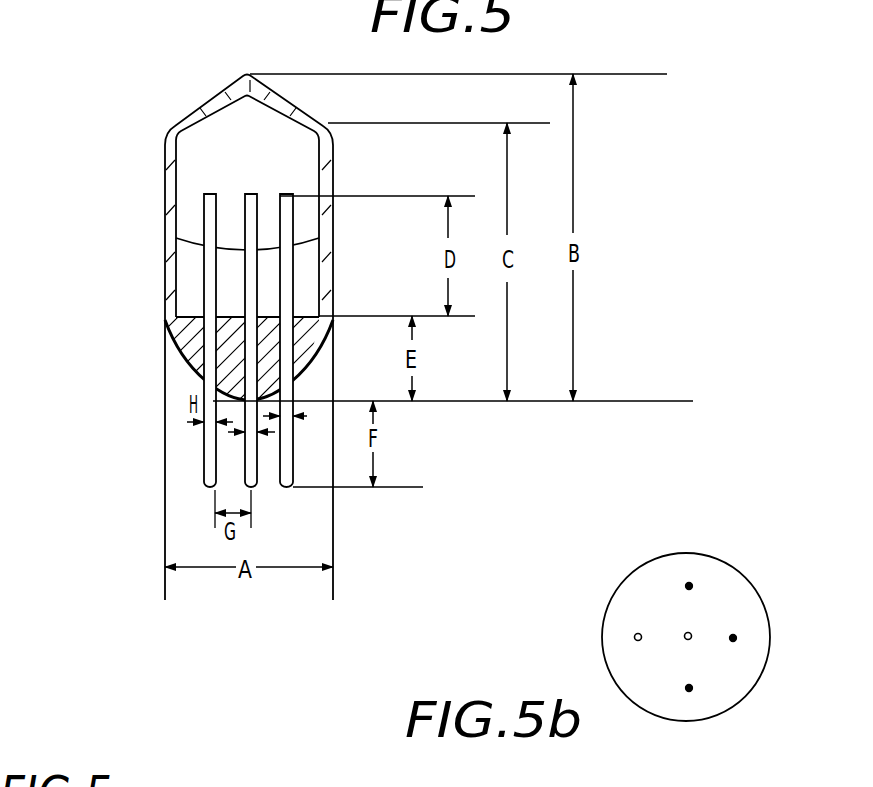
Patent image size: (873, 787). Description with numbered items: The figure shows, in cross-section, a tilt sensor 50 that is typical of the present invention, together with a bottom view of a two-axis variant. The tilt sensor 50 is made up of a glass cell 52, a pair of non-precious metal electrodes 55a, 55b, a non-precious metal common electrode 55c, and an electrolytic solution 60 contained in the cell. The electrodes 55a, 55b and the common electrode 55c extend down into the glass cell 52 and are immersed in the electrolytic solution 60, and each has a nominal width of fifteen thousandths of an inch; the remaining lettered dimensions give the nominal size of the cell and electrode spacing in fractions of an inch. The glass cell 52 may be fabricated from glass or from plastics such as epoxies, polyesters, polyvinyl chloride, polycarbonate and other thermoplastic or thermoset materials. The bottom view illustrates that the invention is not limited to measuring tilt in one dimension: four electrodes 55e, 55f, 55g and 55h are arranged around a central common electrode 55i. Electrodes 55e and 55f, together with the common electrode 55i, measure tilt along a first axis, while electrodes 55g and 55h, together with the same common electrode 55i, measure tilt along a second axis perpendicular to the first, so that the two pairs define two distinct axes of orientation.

In FIG. 5, the tilt sensor 50 is at (181, 317).
In FIG. 5, the electrolytic solution 60 is at (187, 273).
In FIG. 5, the glass cell 52 is at (163, 317).
In FIG. 5, the non-precious metal electrode 55a is at (204, 450).
In FIG. 5, the non-precious metal electrode 55b is at (245, 463).
In FIG. 5, the non-precious metal common electrode 55c is at (280, 479).
In FIG. 5B, the electrode 55e is at (691, 583).
In FIG. 5B, the electrode 55f is at (689, 691).
In FIG. 5B, the electrode 55g is at (736, 640).
In FIG. 5B, the electrode 55h is at (636, 634).
In FIG. 5B, the common electrode 55i is at (685, 634).